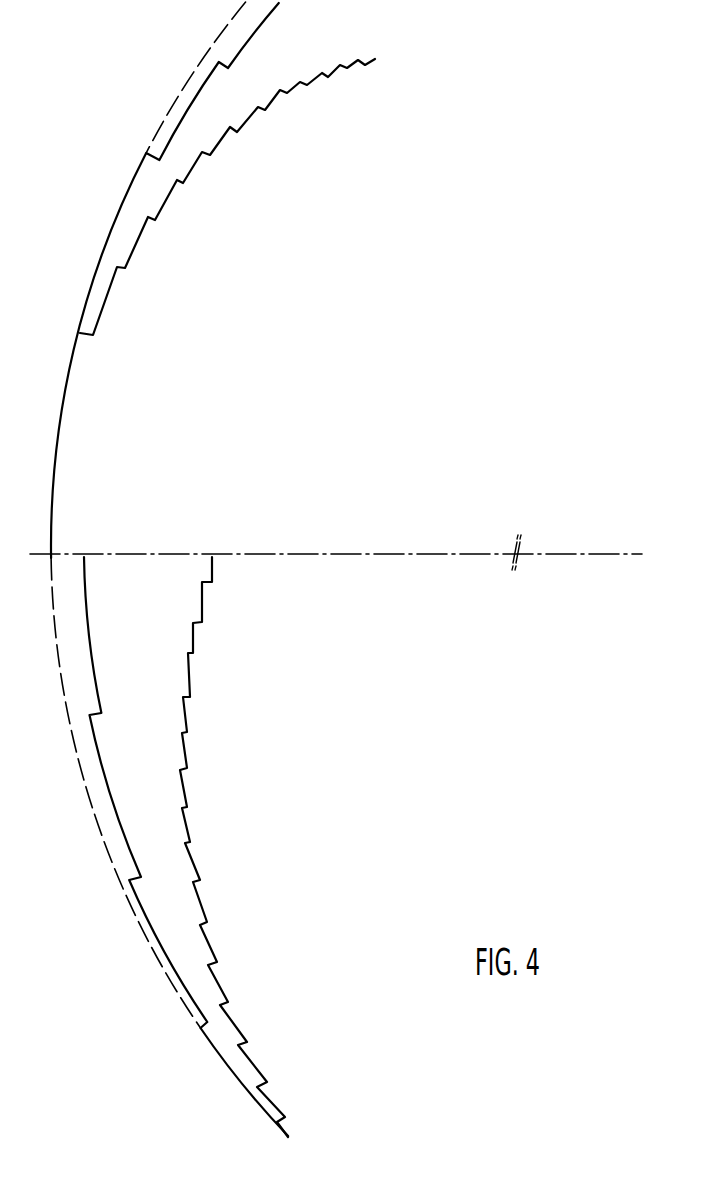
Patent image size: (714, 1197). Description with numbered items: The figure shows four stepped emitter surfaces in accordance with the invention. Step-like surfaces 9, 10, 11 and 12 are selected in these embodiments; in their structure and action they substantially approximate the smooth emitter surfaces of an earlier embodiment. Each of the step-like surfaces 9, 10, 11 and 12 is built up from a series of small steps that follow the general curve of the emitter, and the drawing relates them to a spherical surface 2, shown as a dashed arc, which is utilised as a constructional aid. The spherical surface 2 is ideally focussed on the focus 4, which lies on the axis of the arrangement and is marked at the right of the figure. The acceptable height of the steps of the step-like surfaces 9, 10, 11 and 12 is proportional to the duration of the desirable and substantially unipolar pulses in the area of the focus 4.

The spherical surface 2 is at (196, 68).
The focus 4 is at (645, 556).
The step-like surface 9 is at (268, 102).
The step-like surface 10 is at (190, 750).
The step-like surface 11 is at (103, 752).
The step-like surface 12 is at (257, 32).